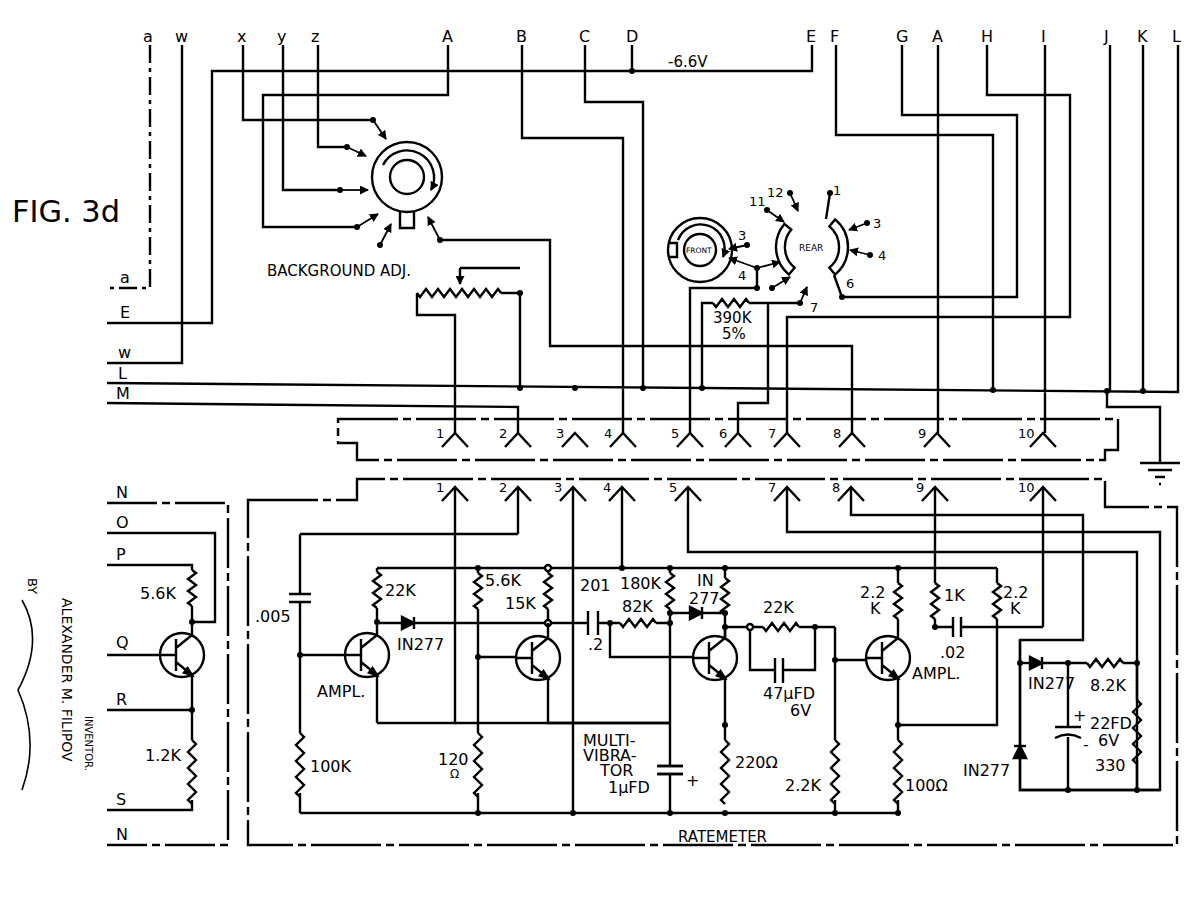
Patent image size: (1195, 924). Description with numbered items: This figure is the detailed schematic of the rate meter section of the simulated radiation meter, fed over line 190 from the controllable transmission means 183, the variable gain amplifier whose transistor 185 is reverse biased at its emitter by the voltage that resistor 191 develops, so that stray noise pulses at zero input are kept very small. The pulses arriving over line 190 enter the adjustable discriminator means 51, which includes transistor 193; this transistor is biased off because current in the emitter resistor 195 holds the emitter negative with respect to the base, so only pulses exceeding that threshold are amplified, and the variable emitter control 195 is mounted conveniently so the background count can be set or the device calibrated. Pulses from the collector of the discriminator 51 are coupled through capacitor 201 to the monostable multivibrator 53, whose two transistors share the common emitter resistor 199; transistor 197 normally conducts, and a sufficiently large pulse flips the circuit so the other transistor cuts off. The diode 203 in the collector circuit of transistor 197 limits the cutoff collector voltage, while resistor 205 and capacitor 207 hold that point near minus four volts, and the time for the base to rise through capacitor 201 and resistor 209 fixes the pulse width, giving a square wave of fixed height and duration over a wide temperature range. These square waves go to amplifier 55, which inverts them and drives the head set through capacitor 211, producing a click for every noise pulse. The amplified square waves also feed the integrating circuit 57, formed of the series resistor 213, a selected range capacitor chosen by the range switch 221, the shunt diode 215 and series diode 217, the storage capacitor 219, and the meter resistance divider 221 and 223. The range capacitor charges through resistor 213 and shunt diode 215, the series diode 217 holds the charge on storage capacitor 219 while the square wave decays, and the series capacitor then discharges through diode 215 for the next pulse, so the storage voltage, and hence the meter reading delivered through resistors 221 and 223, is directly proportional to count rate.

The adjustable discriminator means 51 is at (386, 732).
The monostable multivibrator 53 is at (545, 748).
The amplifier 55 is at (945, 767).
The integrating circuit 57 is at (1062, 800).
The controllable transmission means 183 is at (168, 686).
The transistor 185 is at (164, 641).
The line 190 is at (165, 533).
The resistor 191 is at (186, 772).
The transistor 193 is at (386, 668).
The emitter resistor 195 is at (458, 297).
The transistor 197 is at (704, 680).
The common emitter resistor 199 is at (730, 778).
The capacitor 201 is at (595, 605).
The diode 203 is at (716, 592).
The resistor 205 is at (675, 584).
The capacitor 207 is at (674, 762).
The resistor 209 is at (648, 632).
The capacitor 211 is at (1008, 592).
The series resistor 213 is at (942, 584).
The shunt diode 215 is at (1012, 752).
The series diode 217 is at (1040, 655).
The storage capacitor 219 is at (1062, 738).
The range switch 221 is at (443, 171).
The resistance divider 223 is at (1135, 714).